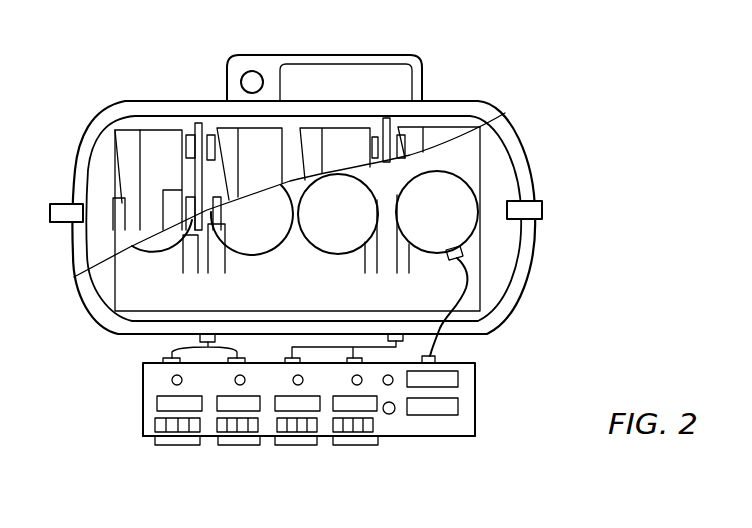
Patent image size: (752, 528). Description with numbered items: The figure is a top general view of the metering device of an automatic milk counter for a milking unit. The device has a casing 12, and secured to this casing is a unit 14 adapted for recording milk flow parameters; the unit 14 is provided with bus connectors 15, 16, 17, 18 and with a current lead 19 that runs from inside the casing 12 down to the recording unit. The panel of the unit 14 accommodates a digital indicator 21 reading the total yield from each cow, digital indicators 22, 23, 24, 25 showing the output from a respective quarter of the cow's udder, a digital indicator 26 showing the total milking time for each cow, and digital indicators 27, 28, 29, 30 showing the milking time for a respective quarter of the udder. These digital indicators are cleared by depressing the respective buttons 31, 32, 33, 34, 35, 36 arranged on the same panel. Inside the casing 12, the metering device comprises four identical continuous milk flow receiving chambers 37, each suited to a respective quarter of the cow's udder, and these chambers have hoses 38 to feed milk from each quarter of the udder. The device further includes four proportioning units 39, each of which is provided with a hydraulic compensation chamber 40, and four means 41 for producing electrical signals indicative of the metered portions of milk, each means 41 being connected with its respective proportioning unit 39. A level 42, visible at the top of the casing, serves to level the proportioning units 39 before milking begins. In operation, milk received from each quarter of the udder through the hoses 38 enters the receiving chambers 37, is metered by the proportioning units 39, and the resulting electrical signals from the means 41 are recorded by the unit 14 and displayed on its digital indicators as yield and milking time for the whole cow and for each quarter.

The casing 12 is at (530, 178).
The unit 14 is at (143, 371).
The bus connector 15 is at (362, 445).
The bus connector 16 is at (157, 445).
The bus connector 17 is at (232, 445).
The bus connector 18 is at (310, 445).
The current lead 19 is at (468, 288).
The digital indicator 21 is at (460, 408).
The digital indicator 22 is at (157, 399).
The digital indicator 23 is at (201, 441).
The digital indicator 24 is at (272, 437).
The digital indicator 25 is at (332, 408).
The digital indicator 26 is at (460, 378).
The digital indicator 27 is at (155, 425).
The digital indicator 28 is at (216, 408).
The digital indicator 29 is at (275, 408).
The digital indicator 30 is at (374, 422).
The button 31 is at (166, 380).
The button 32 is at (235, 380).
The button 33 is at (293, 380).
The button 34 is at (352, 380).
The button 35 is at (379, 375).
The button 36 is at (393, 414).
The continuous milk flow receiving chamber 37 is at (266, 247).
The hose 38 is at (184, 260).
The proportioning unit 39 is at (157, 137).
The hydraulic compensation chamber 40 is at (125, 148).
The means for producing electrical signals 41 is at (438, 88).
The level 42 is at (253, 77).